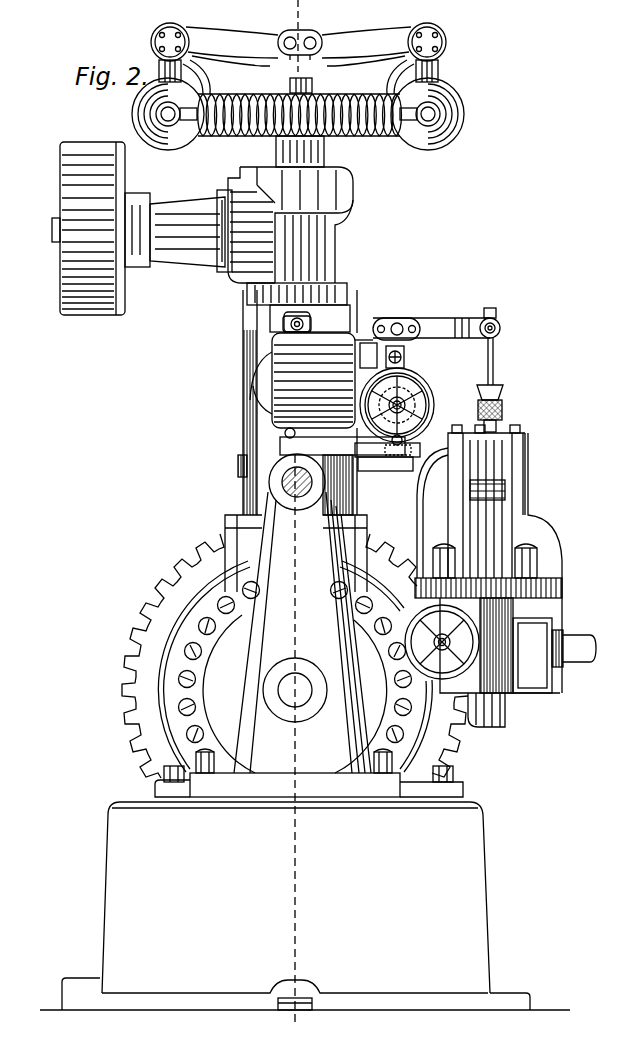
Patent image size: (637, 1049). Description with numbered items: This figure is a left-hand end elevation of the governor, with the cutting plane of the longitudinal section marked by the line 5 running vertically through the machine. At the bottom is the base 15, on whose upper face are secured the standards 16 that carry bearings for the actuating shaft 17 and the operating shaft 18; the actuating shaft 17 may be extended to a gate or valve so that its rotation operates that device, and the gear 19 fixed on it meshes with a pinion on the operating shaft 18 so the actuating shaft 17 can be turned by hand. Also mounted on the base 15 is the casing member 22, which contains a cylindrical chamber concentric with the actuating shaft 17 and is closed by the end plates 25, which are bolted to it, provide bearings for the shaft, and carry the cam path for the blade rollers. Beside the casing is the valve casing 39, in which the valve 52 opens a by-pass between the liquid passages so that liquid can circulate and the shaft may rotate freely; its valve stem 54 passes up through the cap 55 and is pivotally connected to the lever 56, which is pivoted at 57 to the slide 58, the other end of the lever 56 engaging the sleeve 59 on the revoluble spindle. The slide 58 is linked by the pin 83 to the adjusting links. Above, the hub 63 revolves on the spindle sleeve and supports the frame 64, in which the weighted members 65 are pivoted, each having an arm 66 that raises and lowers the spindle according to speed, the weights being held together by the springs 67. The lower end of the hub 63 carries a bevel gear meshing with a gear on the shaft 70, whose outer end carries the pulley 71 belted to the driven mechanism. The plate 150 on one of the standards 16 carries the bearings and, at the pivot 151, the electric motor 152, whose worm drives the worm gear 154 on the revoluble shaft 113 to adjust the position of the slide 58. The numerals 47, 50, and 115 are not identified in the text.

The section line 5 is at (297, 523).
The base 15 is at (465, 914).
The standards 16 is at (234, 683).
The actuating shaft 17 is at (298, 678).
The operating shaft 18 is at (283, 484).
The gear 19 is at (141, 617).
The casing member 22 is at (238, 546).
The end plates 25 is at (172, 696).
The valve casing 39 is at (524, 472).
The shaft 47 is at (571, 641).
The stud 50 is at (501, 716).
The valve 52 is at (478, 662).
The valve stem 54 is at (493, 352).
The cap 55 is at (503, 421).
The lever 56 is at (447, 321).
The pivot 57 is at (398, 323).
The slide 58 is at (370, 342).
The sleeve 59 is at (283, 323).
The hub 63 is at (322, 250).
The frame 64 is at (393, 40).
The weighted members 65 is at (150, 113).
The arm 66 is at (240, 44).
The springs 67 is at (352, 134).
The shaft 70 is at (170, 252).
The pulley 71 is at (62, 282).
The pin 83 is at (401, 352).
The revoluble shaft 113 is at (415, 410).
The wheel 115 is at (431, 393).
The plate 150 is at (365, 455).
The pivot 151 is at (288, 436).
The electric motor 152 is at (275, 400).
The worm gear 154 is at (406, 405).